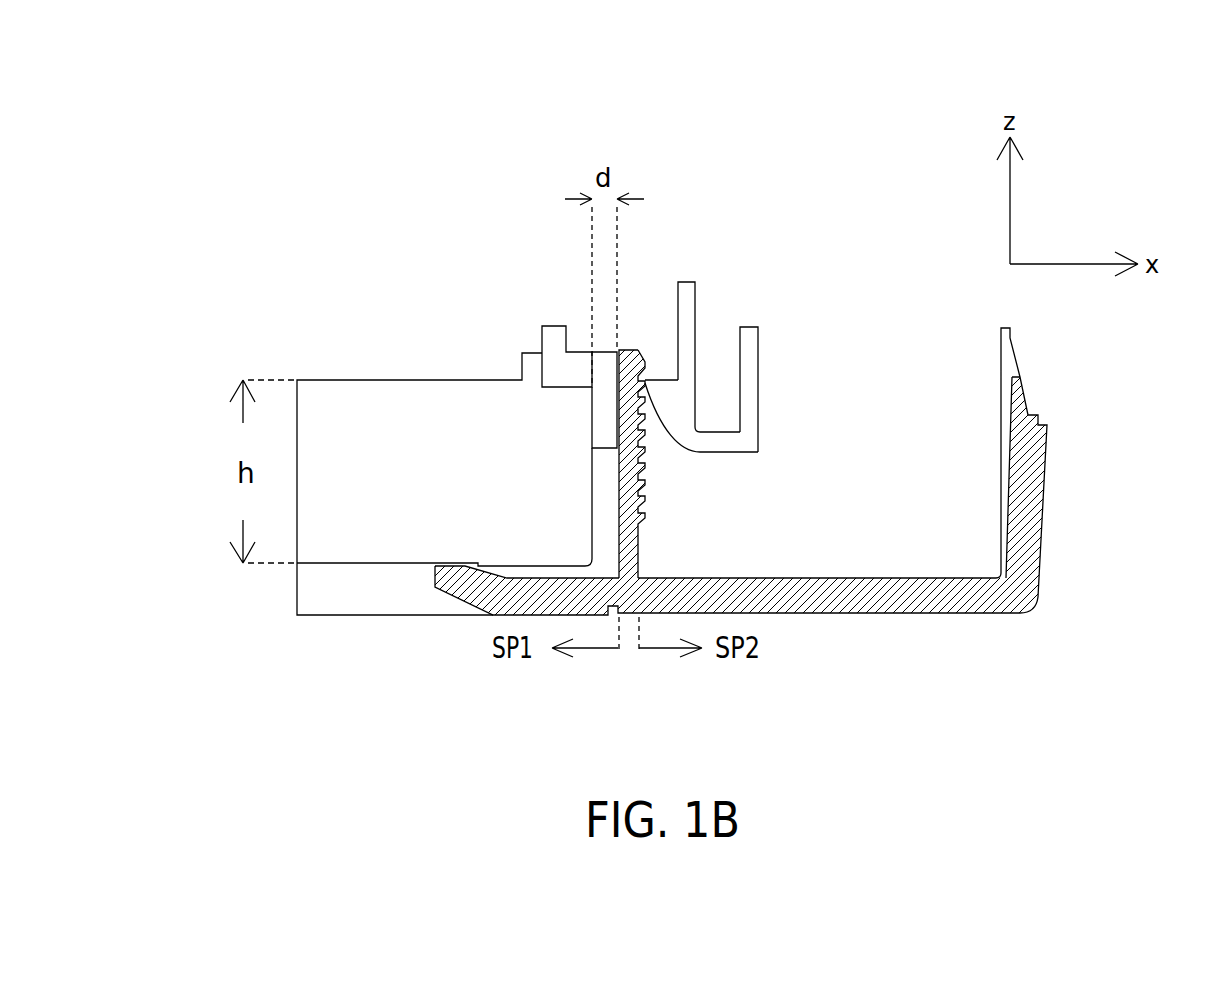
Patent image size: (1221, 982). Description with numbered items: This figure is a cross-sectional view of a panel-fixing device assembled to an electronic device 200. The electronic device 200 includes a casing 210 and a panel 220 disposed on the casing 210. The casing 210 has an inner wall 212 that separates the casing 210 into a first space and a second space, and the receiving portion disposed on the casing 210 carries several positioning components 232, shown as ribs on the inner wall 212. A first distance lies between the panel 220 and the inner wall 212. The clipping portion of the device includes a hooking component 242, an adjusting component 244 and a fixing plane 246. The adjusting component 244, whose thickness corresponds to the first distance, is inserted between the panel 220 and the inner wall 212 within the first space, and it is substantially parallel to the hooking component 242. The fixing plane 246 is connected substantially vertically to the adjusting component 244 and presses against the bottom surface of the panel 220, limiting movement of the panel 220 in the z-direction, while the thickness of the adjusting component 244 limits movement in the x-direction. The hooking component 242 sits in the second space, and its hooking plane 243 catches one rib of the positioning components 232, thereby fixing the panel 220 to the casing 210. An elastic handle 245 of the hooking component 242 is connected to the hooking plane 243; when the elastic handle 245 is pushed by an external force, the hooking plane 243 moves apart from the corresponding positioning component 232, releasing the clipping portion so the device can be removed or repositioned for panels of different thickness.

The electronic device 200 is at (242, 177).
The casing 210 is at (1037, 578).
The inner wall 212 is at (626, 349).
The positioning components 232 is at (655, 483).
The panel 220 is at (326, 397).
The adjusting component 244 is at (592, 442).
The fixing plane 246 is at (556, 408).
The hooking component 242 is at (720, 386).
The hooking plane 243 is at (652, 378).
The elastic handle 245 is at (692, 300).